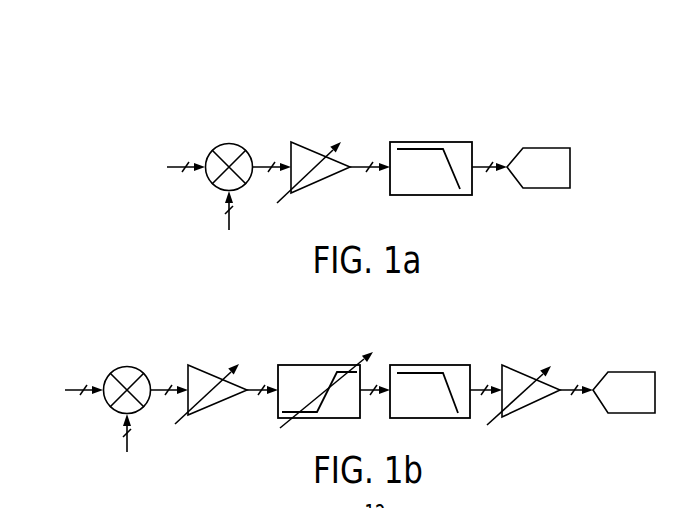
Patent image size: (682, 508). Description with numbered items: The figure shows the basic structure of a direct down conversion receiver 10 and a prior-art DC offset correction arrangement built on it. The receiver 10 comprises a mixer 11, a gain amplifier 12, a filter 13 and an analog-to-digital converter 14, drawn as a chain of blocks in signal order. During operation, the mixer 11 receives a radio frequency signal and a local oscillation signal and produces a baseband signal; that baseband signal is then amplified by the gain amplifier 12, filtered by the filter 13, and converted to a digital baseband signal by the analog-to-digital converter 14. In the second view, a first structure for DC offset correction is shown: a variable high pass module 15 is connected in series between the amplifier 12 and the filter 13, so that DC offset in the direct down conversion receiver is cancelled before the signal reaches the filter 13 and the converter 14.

In FIG. 1A, the direct down conversion receiver 10 is at (606, 126).
In FIG. 1A, the mixer 11 is at (222, 142).
In FIG. 1B, the mixer 11 is at (120, 366).
In FIG. 1A, the gain amplifier 12 is at (303, 142).
In FIG. 1B, the gain amplifier 12 is at (203, 365).
In FIG. 1A, the filter 13 is at (433, 142).
In FIG. 1B, the filter 13 is at (433, 365).
In FIG. 1A, the analog-to-digital converter 14 is at (550, 148).
In FIG. 1B, the analog-to-digital converter 14 is at (633, 372).
In FIG. 1B, the variable high pass module 15 is at (312, 365).